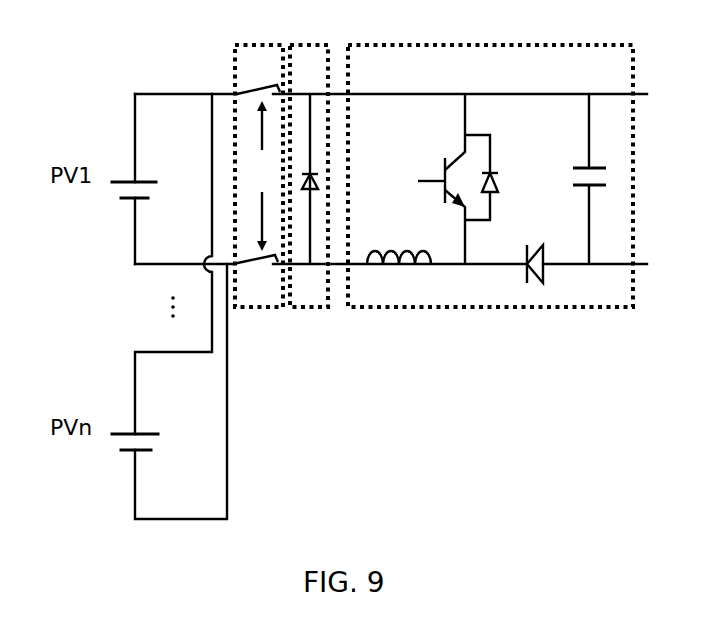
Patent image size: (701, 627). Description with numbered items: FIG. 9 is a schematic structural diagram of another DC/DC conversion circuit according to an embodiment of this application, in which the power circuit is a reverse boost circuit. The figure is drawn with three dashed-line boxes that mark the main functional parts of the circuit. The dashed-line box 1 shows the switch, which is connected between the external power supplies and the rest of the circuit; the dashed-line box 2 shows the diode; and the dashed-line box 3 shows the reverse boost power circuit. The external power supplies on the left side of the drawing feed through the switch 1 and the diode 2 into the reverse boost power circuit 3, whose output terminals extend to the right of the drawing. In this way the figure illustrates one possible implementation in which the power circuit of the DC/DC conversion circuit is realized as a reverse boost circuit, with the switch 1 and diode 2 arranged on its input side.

The switch 1 is at (252, 307).
The diode 2 is at (303, 307).
The reverse boost power circuit 3 is at (463, 307).